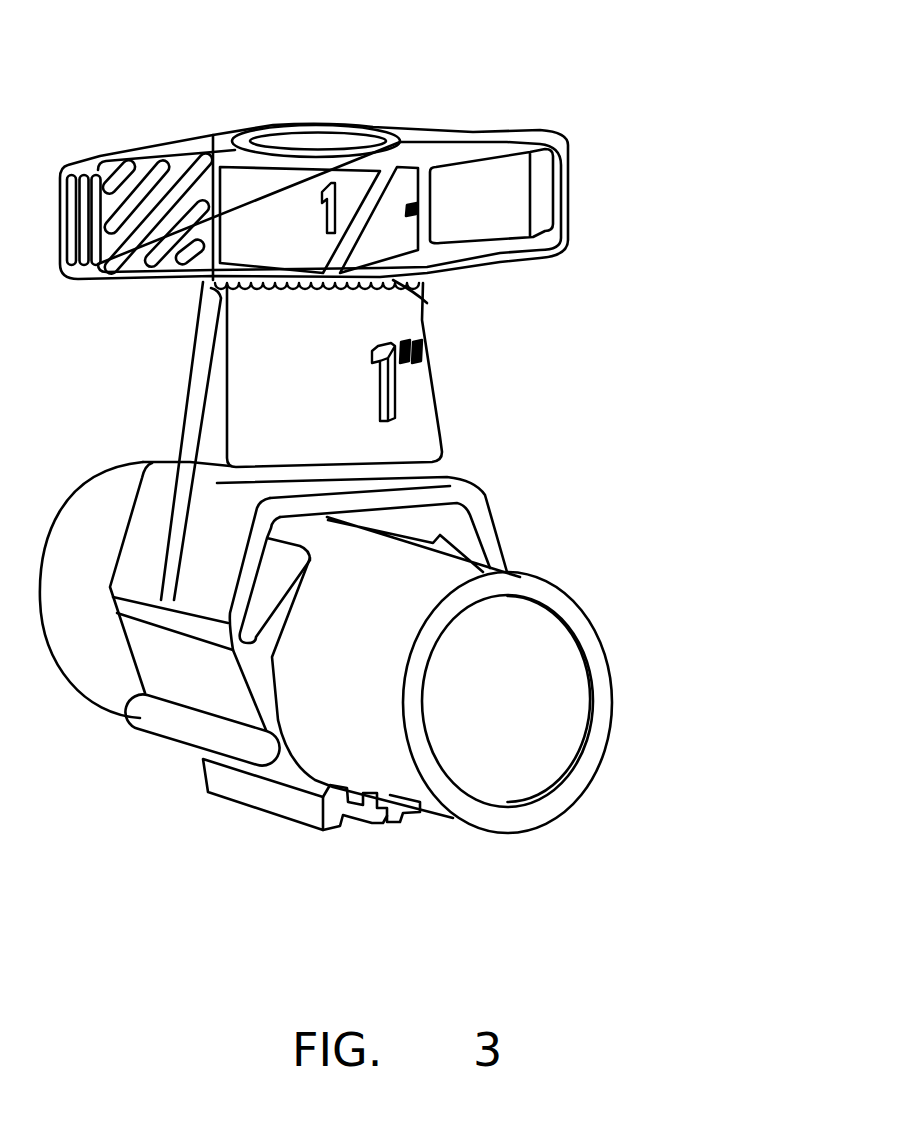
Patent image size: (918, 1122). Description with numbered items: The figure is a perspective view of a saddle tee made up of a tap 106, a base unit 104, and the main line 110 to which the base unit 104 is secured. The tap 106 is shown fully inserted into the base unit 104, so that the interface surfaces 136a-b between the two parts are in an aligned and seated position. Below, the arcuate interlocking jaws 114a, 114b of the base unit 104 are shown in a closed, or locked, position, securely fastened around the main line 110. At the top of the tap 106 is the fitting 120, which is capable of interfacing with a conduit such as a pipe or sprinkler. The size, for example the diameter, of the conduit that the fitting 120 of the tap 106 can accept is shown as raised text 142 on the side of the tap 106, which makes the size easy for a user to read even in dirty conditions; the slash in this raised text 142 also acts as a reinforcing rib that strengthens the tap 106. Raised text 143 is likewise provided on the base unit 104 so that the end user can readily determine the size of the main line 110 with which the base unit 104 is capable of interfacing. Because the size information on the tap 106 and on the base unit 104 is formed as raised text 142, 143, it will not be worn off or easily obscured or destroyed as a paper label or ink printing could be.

The base unit 104 is at (413, 433).
The tap 106 is at (413, 128).
The main line 110 is at (613, 698).
The arcuate interlocking jaw 114a is at (407, 813).
The arcuate interlocking jaw 114b is at (305, 812).
The fitting 120 is at (282, 127).
The interface surfaces 136a-b is at (400, 287).
The raised text 142 is at (320, 210).
The raised text 143 is at (375, 390).